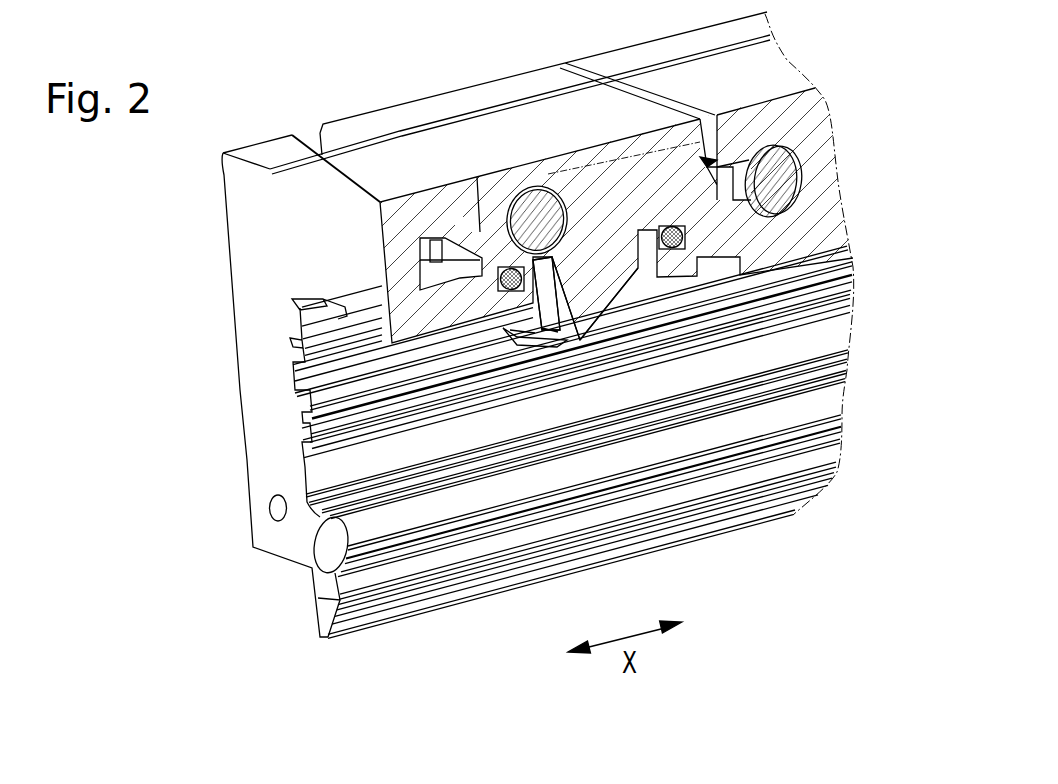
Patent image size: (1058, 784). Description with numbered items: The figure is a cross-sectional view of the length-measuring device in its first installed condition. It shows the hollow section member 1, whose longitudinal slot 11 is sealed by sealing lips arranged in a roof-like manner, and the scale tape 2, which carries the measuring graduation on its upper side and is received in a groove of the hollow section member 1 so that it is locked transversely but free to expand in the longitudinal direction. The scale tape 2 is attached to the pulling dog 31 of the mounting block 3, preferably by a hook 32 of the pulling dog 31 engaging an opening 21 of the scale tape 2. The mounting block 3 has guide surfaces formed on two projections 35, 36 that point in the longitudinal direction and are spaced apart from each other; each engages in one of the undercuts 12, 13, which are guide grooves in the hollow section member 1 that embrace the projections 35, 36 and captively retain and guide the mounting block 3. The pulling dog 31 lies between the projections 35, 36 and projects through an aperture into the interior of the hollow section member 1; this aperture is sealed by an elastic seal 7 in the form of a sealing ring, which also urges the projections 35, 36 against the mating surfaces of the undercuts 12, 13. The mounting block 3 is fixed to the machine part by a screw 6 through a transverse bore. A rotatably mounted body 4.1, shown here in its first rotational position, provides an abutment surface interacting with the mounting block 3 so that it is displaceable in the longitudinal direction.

The hollow section member 1 is at (242, 242).
The scale tape 2 is at (698, 288).
The mounting block 3 is at (415, 120).
The body 4.1 is at (767, 185).
The screw 6 is at (540, 220).
The elastic seal 7 is at (503, 270).
The longitudinal slot 11 is at (312, 6).
The undercut 12 is at (433, 275).
The undercut 13 is at (722, 167).
The opening 21 is at (597, 330).
The pulling dog 31 is at (625, 278).
The hook 32 is at (568, 343).
The projection 35 is at (455, 253).
The projection 36 is at (712, 185).